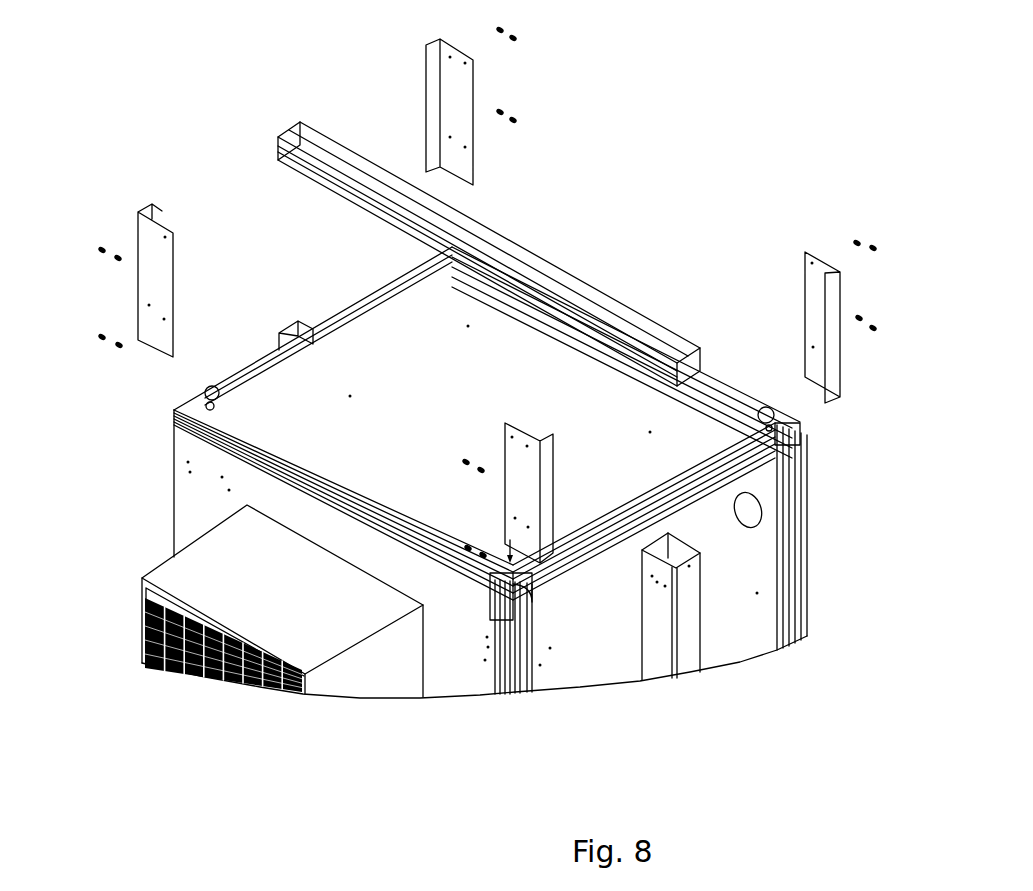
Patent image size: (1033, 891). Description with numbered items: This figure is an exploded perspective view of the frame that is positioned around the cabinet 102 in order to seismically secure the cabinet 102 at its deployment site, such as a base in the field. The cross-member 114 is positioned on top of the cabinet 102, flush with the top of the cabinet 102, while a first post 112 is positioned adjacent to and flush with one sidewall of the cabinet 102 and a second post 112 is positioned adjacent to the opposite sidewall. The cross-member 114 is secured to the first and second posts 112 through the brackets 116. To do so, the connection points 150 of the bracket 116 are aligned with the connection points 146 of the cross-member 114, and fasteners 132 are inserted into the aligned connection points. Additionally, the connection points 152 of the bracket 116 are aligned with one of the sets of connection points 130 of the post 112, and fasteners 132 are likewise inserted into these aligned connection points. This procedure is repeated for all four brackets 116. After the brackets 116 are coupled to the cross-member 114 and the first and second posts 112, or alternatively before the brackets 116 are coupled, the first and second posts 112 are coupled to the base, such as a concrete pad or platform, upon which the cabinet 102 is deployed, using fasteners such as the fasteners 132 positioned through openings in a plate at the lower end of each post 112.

The cabinet 102 is at (762, 548).
The post 112 is at (726, 628).
The cross-member 114 is at (466, 237).
The bracket 116 is at (834, 356).
The connection points of the post 130 is at (643, 602).
The fasteners 132 is at (99, 248).
The connection points of the cross-member 146 is at (284, 138).
The connection points of the bracket 150 is at (150, 233).
The connection points of the bracket 152 is at (512, 523).